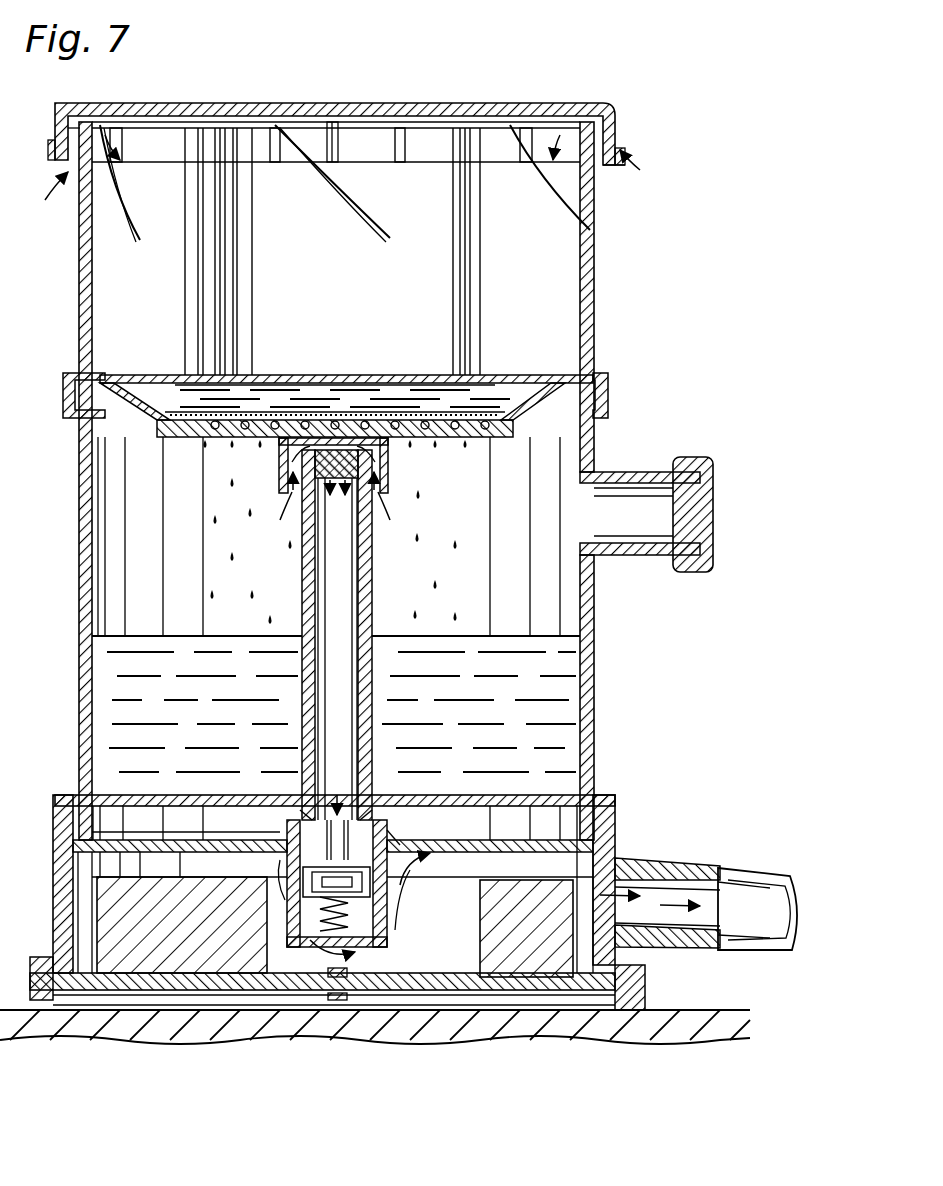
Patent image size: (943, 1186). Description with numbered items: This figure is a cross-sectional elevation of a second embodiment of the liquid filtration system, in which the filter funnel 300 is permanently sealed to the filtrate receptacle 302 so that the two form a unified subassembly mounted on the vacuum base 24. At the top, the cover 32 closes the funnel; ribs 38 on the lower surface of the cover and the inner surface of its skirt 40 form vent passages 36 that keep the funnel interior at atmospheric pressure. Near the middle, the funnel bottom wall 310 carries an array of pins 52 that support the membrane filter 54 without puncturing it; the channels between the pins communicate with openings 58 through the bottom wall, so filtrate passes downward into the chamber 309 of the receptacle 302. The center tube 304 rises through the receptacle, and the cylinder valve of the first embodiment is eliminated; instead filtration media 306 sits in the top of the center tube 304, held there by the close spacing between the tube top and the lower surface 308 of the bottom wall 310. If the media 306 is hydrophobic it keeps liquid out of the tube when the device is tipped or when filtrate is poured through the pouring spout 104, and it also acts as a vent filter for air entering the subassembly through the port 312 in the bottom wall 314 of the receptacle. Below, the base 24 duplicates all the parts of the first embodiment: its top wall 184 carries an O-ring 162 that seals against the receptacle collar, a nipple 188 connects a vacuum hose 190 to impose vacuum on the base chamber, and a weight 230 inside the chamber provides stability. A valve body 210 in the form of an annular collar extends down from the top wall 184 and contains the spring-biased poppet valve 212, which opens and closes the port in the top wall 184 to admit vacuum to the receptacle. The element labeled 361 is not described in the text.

The cover 32 is at (517, 100).
The vent passages 36 is at (422, 123).
The ribs 38 is at (340, 122).
The skirt 40 is at (620, 137).
The filter funnel 300 is at (598, 276).
The pins 52 is at (290, 420).
The membrane filter 54 is at (450, 413).
The bottom wall 310 is at (330, 413).
The lower surface 308 is at (370, 430).
The openings 58 is at (232, 438).
The filtration media 306 is at (390, 468).
The center tube 304 is at (373, 560).
The chamber 309 is at (290, 572).
The pouring spout 104 is at (646, 560).
The filtrate receptacle 302 is at (598, 680).
The port 312 is at (345, 806).
The bottom wall 314 is at (588, 797).
The vacuum base 24 is at (620, 843).
The passage 361 is at (285, 834).
The O-ring 162 is at (382, 846).
The nipple 188 is at (673, 862).
The vacuum hose 190 is at (730, 866).
The weight 230 is at (213, 962).
The poppet valve 212 is at (286, 962).
The valve body 210 is at (395, 962).
The top wall 184 is at (482, 962).